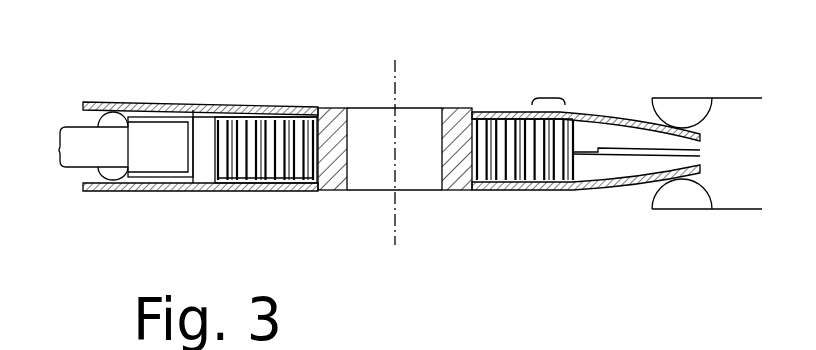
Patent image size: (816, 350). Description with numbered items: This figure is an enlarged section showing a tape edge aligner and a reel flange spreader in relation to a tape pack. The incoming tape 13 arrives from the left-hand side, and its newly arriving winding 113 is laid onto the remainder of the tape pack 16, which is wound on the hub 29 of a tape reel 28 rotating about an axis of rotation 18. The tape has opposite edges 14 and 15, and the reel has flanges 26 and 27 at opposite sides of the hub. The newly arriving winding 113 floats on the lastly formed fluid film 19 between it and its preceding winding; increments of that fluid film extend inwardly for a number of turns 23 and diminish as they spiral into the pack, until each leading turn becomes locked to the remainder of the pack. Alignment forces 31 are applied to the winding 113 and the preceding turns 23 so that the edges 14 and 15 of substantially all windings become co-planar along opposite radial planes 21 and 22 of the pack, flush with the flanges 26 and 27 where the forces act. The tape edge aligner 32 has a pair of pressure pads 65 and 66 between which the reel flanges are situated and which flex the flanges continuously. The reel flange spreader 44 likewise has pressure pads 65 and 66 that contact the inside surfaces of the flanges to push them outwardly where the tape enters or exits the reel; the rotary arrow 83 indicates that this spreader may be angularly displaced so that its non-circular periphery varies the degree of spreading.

The tape 13 is at (193, 161).
The tape edge 14 is at (193, 102).
The opposite tape edge 15 is at (199, 192).
The tape pack 16 is at (532, 200).
The axis of rotation 18 is at (393, 230).
The fluid film 19 is at (567, 186).
The radial plane 21 is at (258, 117).
The radial plane 22 is at (258, 183).
The number of turns 23 is at (548, 96).
The reel flange 26 is at (457, 110).
The reel flange 27 is at (460, 191).
The tape reel 28 is at (333, 98).
The hub 29 is at (350, 150).
The alignment forces 31 is at (574, 100).
The tape edge aligner 32 is at (677, 100).
The reel flange spreader 44 is at (78, 158).
The pressure pad 65 is at (112, 118).
The pressure pad 66 is at (128, 175).
The rotary arrow 83 is at (40, 150).
The newly arriving winding 113 is at (700, 153).